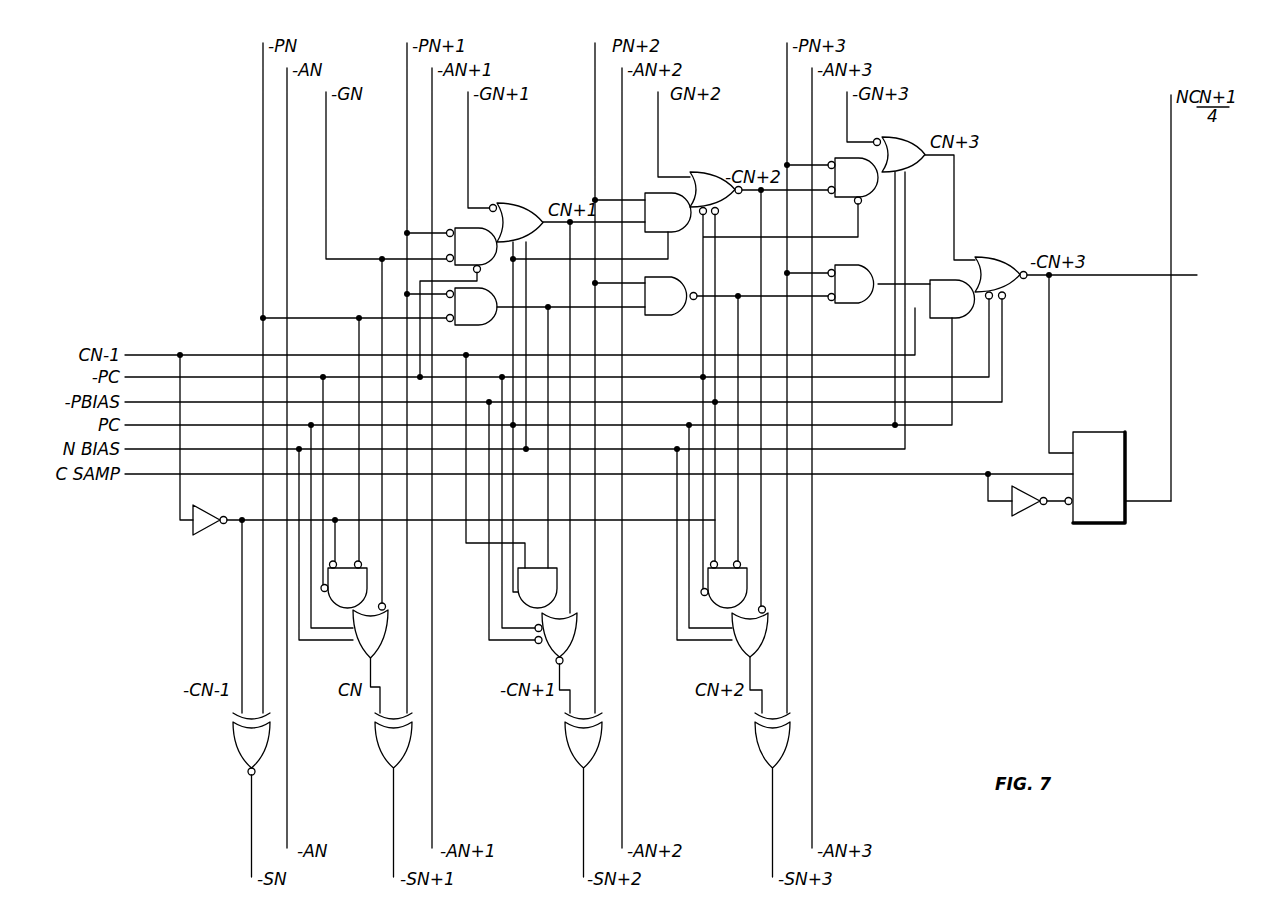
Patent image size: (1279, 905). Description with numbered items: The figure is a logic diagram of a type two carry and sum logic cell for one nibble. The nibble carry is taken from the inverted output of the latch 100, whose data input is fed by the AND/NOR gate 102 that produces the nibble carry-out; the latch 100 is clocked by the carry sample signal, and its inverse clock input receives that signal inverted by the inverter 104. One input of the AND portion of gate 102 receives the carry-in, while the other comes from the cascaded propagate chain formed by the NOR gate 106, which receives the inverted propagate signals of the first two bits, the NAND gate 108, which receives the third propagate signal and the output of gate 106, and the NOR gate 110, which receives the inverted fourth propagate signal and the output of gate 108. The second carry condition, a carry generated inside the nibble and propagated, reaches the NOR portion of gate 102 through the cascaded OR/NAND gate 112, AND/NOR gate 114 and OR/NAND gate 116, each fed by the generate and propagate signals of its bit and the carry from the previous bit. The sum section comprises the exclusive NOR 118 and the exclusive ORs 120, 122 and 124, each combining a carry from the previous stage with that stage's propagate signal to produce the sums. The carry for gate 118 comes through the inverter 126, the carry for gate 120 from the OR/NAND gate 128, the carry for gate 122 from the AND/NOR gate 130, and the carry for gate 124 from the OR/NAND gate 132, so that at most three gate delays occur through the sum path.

The latch 100 is at (1118, 453).
The AND/NOR gate 102 is at (1008, 257).
The inverter 104 is at (1038, 517).
The NOR gate 106 is at (546, 318).
The NAND gate 108 is at (665, 313).
The NOR gate 110 is at (851, 302).
The OR/NAND gate 112 is at (517, 201).
The AND/NOR gate 114 is at (716, 170).
The OR/NAND gate 116 is at (914, 169).
The exclusive NOR 118 is at (225, 795).
The exclusive OR 120 is at (370, 795).
The exclusive OR 122 is at (556, 795).
The exclusive OR 124 is at (745, 795).
The inverter 126 is at (443, 536).
The OR/NAND gate 128 is at (348, 637).
The AND/NOR gate 130 is at (530, 640).
The OR/NAND gate 132 is at (724, 637).